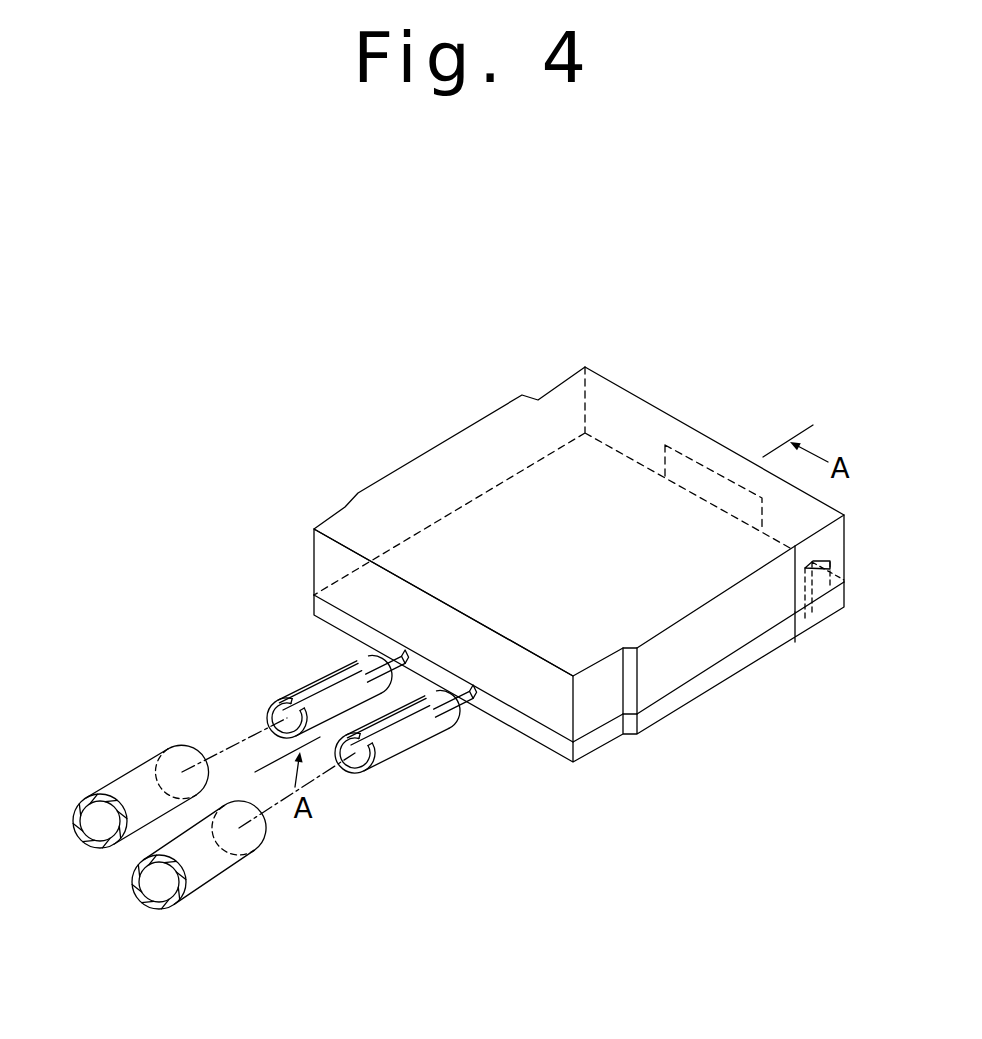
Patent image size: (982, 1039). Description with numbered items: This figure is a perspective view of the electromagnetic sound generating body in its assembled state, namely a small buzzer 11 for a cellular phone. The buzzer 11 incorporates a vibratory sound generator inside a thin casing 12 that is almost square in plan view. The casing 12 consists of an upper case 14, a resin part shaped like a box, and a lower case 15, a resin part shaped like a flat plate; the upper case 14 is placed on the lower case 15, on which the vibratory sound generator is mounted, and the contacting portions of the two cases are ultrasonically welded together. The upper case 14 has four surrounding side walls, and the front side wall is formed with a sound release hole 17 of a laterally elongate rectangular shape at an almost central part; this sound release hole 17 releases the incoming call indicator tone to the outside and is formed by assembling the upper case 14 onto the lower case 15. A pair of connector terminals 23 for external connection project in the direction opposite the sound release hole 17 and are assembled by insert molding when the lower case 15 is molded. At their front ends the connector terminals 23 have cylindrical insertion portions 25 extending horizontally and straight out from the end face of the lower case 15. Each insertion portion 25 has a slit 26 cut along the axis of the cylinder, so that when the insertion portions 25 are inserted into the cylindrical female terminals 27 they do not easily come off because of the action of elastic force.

The buzzer 11 is at (538, 517).
The casing 12 is at (620, 382).
The upper case 14 is at (460, 430).
The lower case 15 is at (715, 688).
The sound release hole 17 is at (668, 460).
The connector terminals 23 is at (336, 744).
The insertion portions 25 is at (270, 708).
The slit 26 is at (318, 673).
The female terminals 27 is at (125, 772).